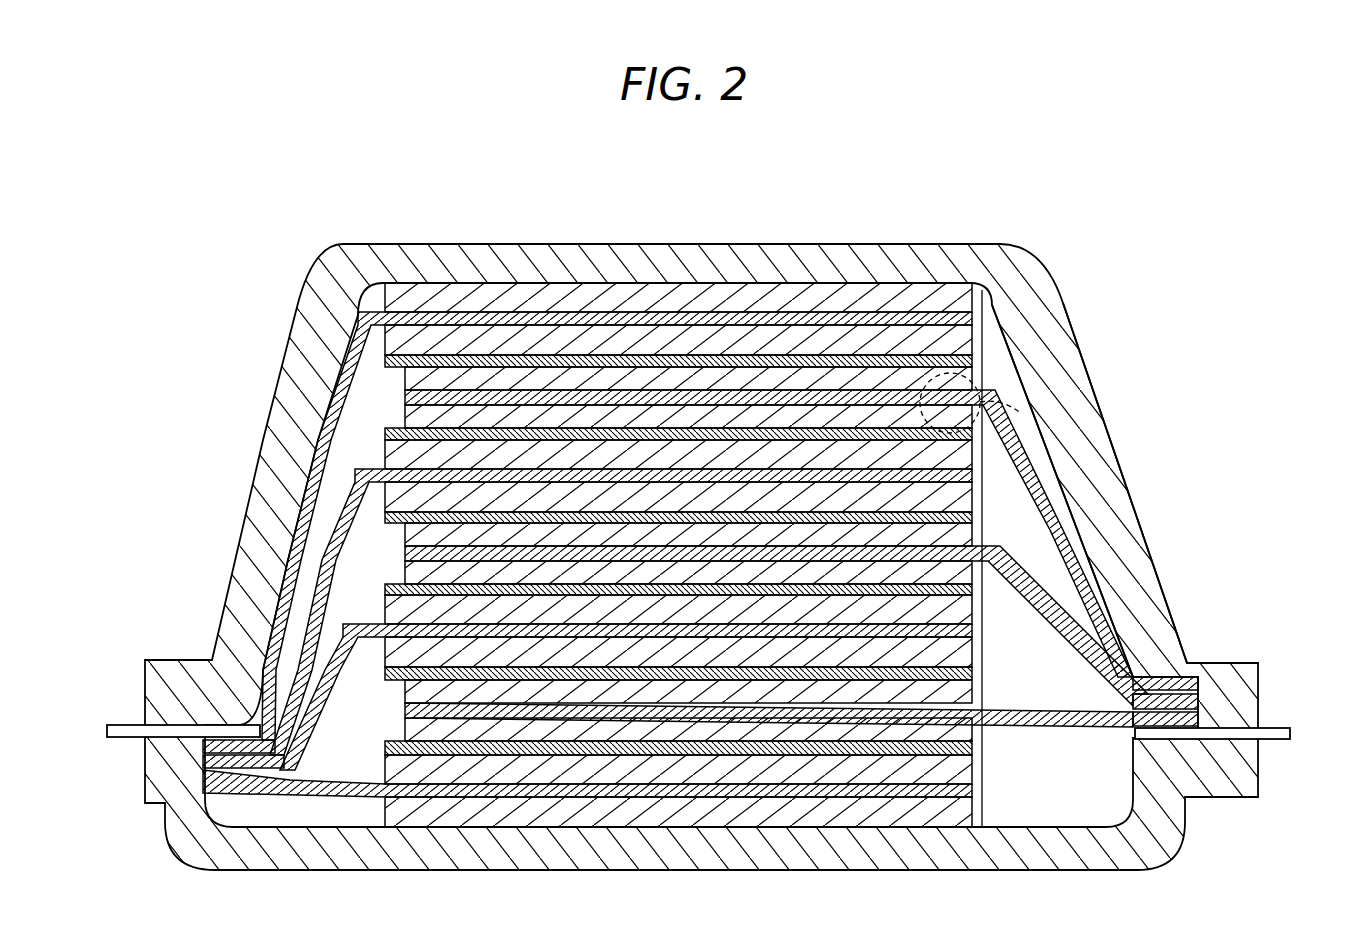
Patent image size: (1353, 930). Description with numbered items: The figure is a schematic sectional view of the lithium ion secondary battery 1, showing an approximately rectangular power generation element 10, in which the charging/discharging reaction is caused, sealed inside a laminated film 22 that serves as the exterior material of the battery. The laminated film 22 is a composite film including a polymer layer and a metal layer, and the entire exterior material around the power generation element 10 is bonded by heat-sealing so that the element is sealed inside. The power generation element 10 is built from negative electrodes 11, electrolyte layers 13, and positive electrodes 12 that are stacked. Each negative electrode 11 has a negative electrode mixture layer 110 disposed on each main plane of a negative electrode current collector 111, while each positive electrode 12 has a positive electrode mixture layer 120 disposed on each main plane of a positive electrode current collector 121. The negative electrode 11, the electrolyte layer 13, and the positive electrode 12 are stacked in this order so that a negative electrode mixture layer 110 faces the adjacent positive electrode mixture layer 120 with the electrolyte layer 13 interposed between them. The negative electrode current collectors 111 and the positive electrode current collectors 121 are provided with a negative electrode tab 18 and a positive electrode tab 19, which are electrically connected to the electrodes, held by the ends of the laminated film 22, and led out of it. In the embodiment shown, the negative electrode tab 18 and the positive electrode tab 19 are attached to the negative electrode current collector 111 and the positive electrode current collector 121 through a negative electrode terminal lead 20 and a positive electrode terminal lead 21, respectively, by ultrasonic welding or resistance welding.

The lithium ion secondary battery 1 is at (696, 504).
The power generation element 10 is at (700, 483).
The negative electrode 11 is at (587, 483).
The negative electrode mixture layer 110 is at (524, 300).
The negative electrode current collector 111 is at (582, 318).
The positive electrode 12 is at (801, 440).
The positive electrode mixture layer 120 is at (778, 380).
The positive electrode current collector 121 is at (835, 398).
The electrolyte layer 13 is at (710, 361).
The negative electrode tab 18 is at (128, 725).
The positive electrode tab 19 is at (1260, 728).
The negative electrode terminal lead 20 is at (295, 594).
The positive electrode terminal lead 21 is at (1107, 608).
The laminated film 22 is at (1083, 397).